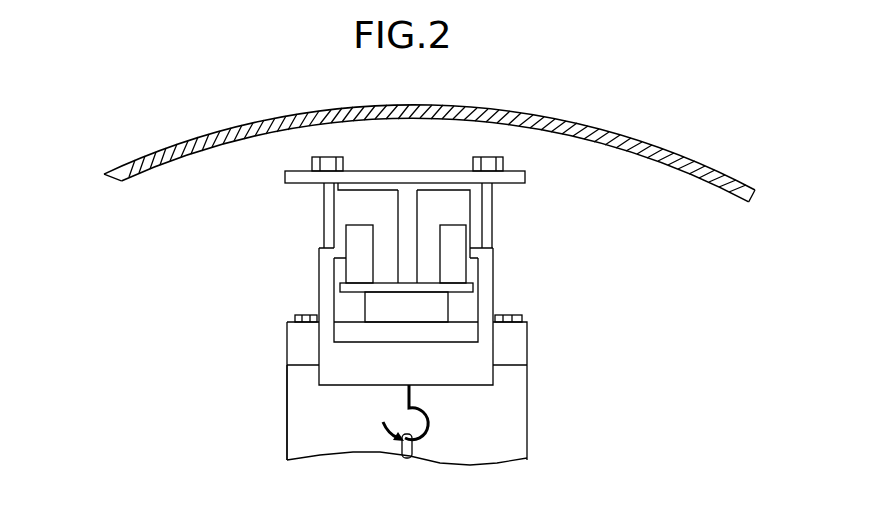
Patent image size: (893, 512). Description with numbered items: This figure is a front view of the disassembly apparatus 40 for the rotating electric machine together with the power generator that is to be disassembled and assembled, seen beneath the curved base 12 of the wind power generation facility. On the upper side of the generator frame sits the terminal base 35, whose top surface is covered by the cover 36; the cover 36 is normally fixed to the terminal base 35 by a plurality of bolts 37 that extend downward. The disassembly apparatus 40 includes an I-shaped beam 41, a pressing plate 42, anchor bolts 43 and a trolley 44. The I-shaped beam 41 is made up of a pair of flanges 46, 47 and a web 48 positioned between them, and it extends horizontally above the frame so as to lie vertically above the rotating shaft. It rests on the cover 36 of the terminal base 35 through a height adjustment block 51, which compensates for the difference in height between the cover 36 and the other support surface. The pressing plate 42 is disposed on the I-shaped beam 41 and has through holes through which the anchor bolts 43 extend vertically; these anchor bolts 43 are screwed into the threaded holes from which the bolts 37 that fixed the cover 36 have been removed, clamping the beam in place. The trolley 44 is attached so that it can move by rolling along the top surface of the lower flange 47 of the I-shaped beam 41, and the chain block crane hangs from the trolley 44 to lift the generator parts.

The base 12 is at (634, 138).
The terminal base 35 is at (518, 373).
The cover 36 is at (517, 350).
The bolts 37 is at (294, 313).
The disassembly apparatus 40 is at (690, 279).
The I-shaped beam 41 is at (388, 222).
The pressing plate 42 is at (514, 178).
The anchor bolts 43 is at (494, 212).
The trolley 44 is at (318, 350).
The flange 46 is at (353, 190).
The lower flange 47 is at (348, 288).
The web 48 is at (407, 237).
The height adjustment block 51 is at (430, 302).